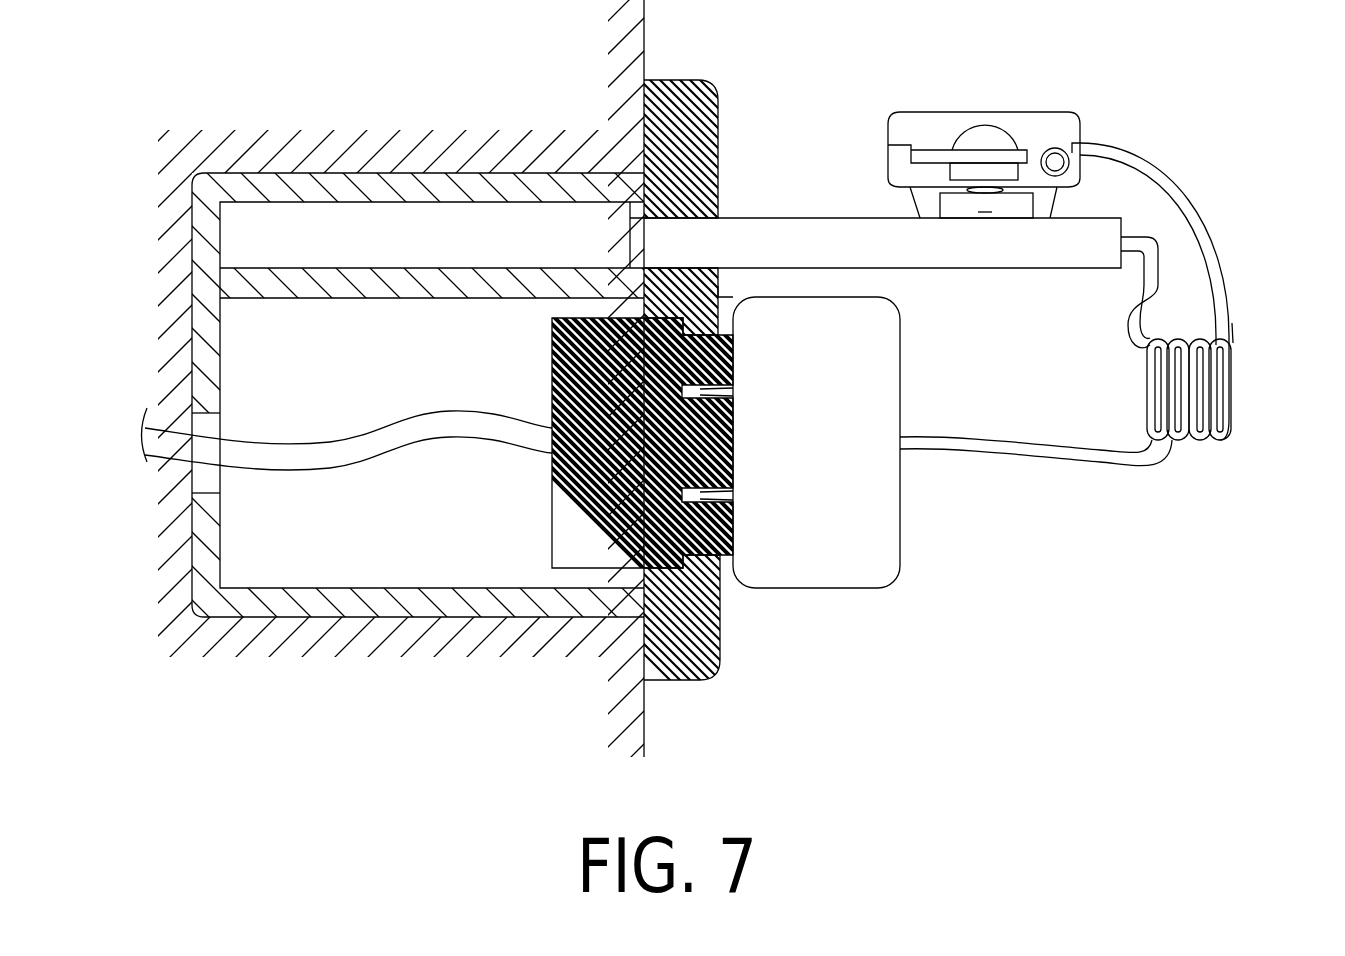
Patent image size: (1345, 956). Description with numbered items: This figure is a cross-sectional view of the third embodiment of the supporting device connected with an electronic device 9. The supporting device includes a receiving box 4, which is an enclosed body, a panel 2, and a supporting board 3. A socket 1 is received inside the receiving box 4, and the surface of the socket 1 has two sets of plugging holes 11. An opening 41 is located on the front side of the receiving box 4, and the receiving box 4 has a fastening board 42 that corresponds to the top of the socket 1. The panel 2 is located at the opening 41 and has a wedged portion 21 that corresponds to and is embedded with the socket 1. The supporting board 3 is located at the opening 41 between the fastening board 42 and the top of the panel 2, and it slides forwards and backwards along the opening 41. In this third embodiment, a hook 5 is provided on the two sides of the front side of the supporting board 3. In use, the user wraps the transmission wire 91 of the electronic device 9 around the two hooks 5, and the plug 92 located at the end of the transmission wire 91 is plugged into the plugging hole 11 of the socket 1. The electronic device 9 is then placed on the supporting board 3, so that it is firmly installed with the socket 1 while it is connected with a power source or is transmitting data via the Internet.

The socket 1 is at (549, 542).
The plugging holes 11 is at (733, 389).
The panel 2 is at (727, 127).
The wedged portion 21 is at (720, 297).
The supporting board 3 is at (508, 222).
The receiving box 4 is at (381, 196).
The opening 41 is at (595, 583).
The fastening board 42 is at (265, 288).
The hook 5 is at (1156, 305).
The electronic device 9 is at (1072, 127).
The transmission wire 91 is at (1196, 428).
The plug 92 is at (868, 535).